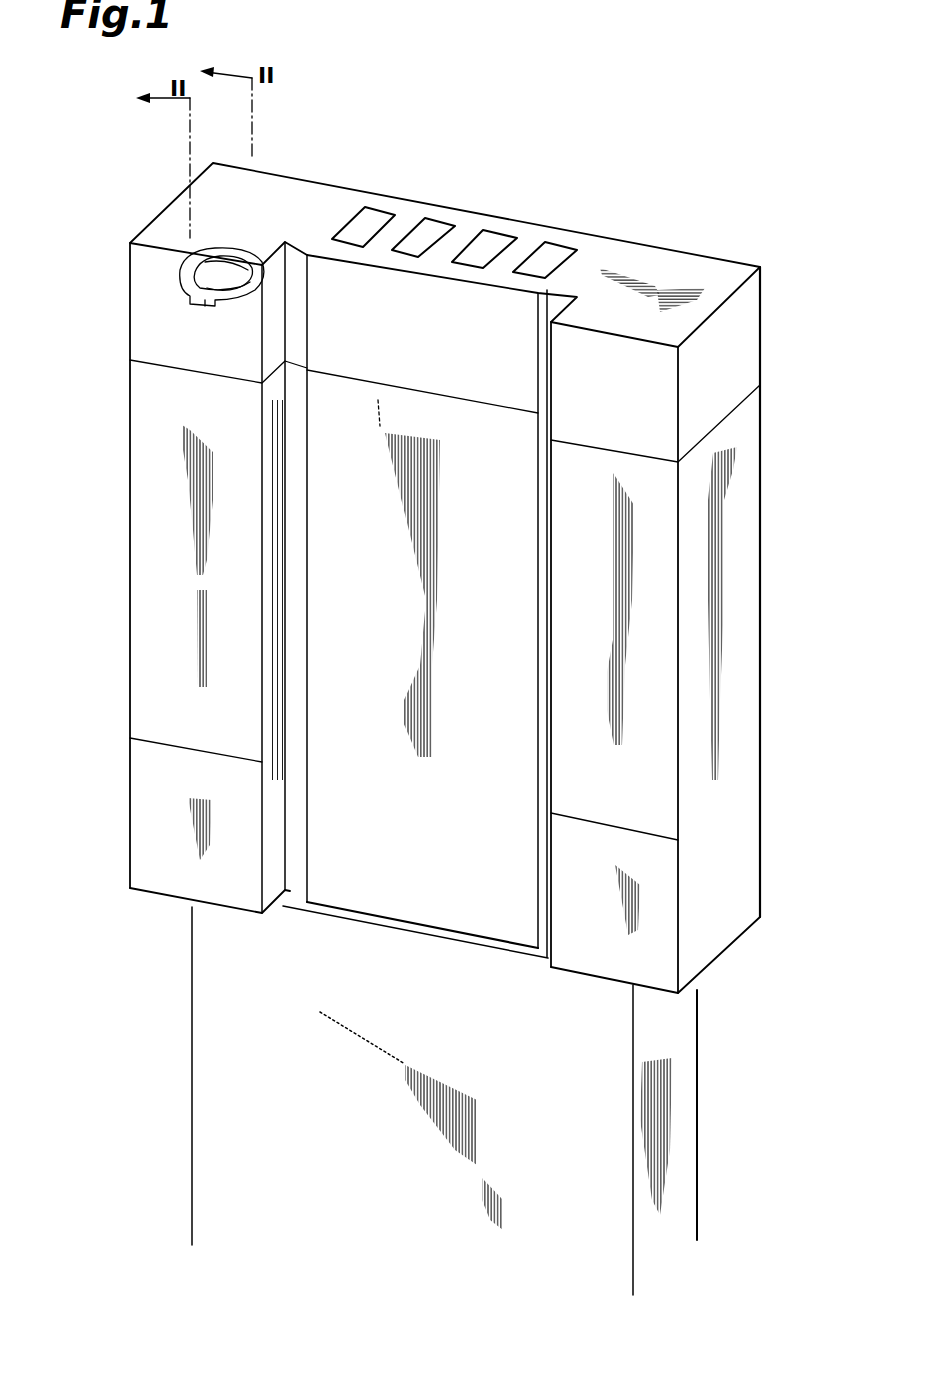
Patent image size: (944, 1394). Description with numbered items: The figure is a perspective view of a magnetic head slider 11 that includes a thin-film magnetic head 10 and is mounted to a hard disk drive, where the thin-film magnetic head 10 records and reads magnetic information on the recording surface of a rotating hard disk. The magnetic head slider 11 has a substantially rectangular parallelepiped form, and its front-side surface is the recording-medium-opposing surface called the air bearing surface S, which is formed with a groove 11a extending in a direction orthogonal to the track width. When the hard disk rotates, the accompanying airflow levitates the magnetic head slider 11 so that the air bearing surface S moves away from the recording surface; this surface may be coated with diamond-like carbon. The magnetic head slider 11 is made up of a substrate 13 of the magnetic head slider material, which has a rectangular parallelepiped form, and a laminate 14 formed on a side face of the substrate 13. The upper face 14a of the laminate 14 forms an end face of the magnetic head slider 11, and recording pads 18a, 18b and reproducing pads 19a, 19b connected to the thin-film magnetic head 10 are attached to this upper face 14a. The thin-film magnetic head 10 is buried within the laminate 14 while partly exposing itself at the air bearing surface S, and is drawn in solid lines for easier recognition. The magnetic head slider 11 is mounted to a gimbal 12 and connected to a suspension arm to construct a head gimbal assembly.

The thin-film magnetic head 10 is at (176, 214).
The magnetic head slider 11 is at (742, 190).
The groove 11a is at (446, 312).
The gimbal 12 is at (672, 1042).
The substrate 13 is at (728, 657).
The laminate 14 is at (752, 299).
The upper face of the laminate 14a is at (680, 283).
The recording pad 18a is at (370, 218).
The recording pad 18b is at (551, 262).
The reproducing pad 19a is at (432, 232).
The reproducing pad 19b is at (490, 258).
The air bearing surface S is at (150, 515).